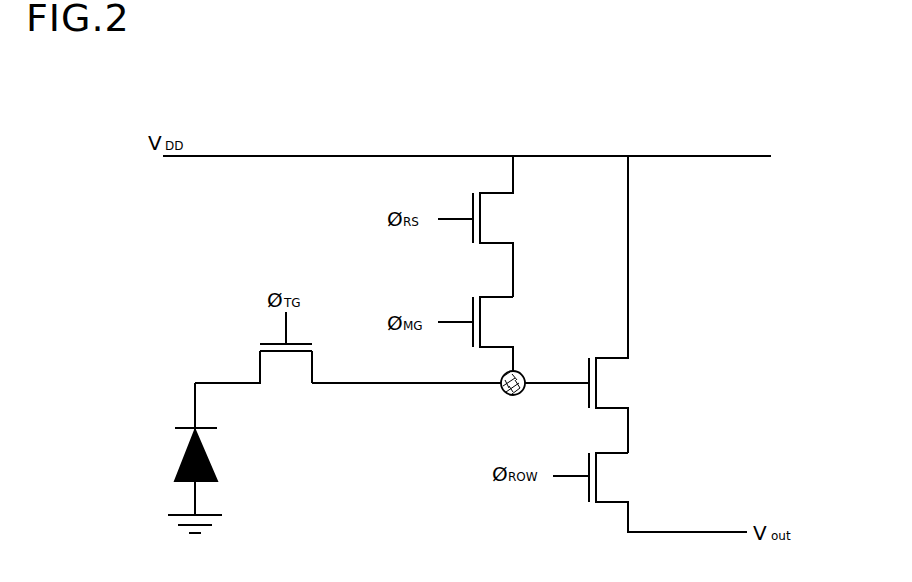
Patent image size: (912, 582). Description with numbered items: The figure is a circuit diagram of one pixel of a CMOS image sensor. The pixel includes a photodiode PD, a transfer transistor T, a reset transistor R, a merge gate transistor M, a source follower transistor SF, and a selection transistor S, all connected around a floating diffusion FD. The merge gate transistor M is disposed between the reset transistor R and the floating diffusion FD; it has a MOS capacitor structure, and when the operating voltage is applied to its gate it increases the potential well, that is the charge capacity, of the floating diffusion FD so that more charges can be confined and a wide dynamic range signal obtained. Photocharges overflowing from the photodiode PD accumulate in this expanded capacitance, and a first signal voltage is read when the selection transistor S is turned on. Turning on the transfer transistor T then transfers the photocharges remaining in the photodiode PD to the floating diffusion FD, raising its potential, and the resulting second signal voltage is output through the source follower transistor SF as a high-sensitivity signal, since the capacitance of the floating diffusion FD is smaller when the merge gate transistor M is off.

The photodiode PD is at (172, 458).
The transfer transistor T is at (253, 365).
The reset transistor R is at (489, 226).
The merge gate transistor M is at (491, 334).
The floating diffusion FD is at (510, 399).
The source follower transistor SF is at (627, 304).
The selection transistor S is at (650, 492).